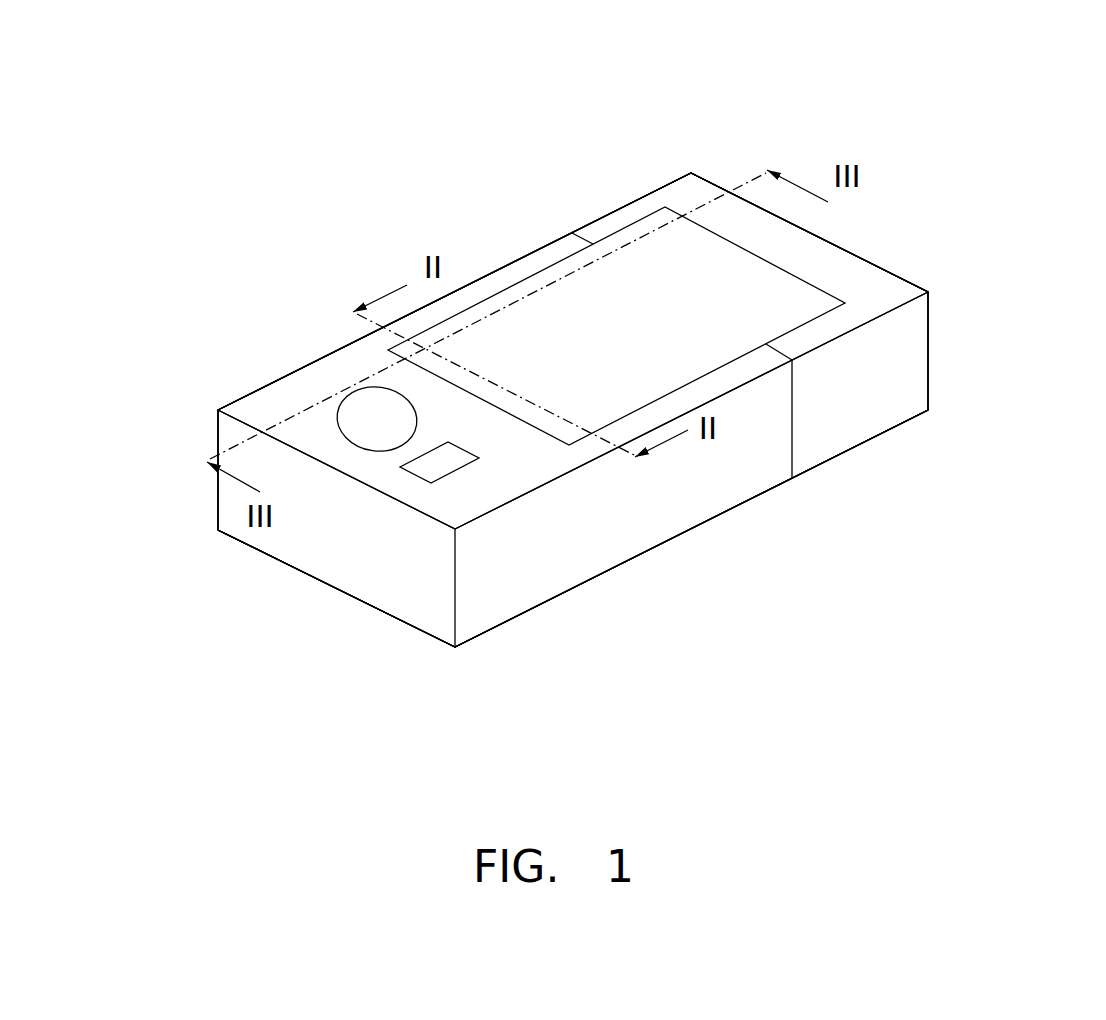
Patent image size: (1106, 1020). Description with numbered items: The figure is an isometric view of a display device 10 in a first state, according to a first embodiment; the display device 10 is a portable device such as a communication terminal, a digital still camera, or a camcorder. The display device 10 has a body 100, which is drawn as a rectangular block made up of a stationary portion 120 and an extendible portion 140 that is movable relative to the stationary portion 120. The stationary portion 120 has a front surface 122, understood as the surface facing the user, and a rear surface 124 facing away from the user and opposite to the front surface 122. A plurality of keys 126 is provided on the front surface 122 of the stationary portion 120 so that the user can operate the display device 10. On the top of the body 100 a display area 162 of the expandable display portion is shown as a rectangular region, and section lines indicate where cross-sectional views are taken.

The display device 10 is at (548, 83).
The body 100 is at (1017, 552).
The stationary portion 120 is at (700, 492).
The front surface 122 is at (307, 387).
The rear surface 124 is at (502, 630).
The keys 126 is at (445, 463).
The extendible portion 140 is at (838, 412).
The display area 162 is at (732, 323).